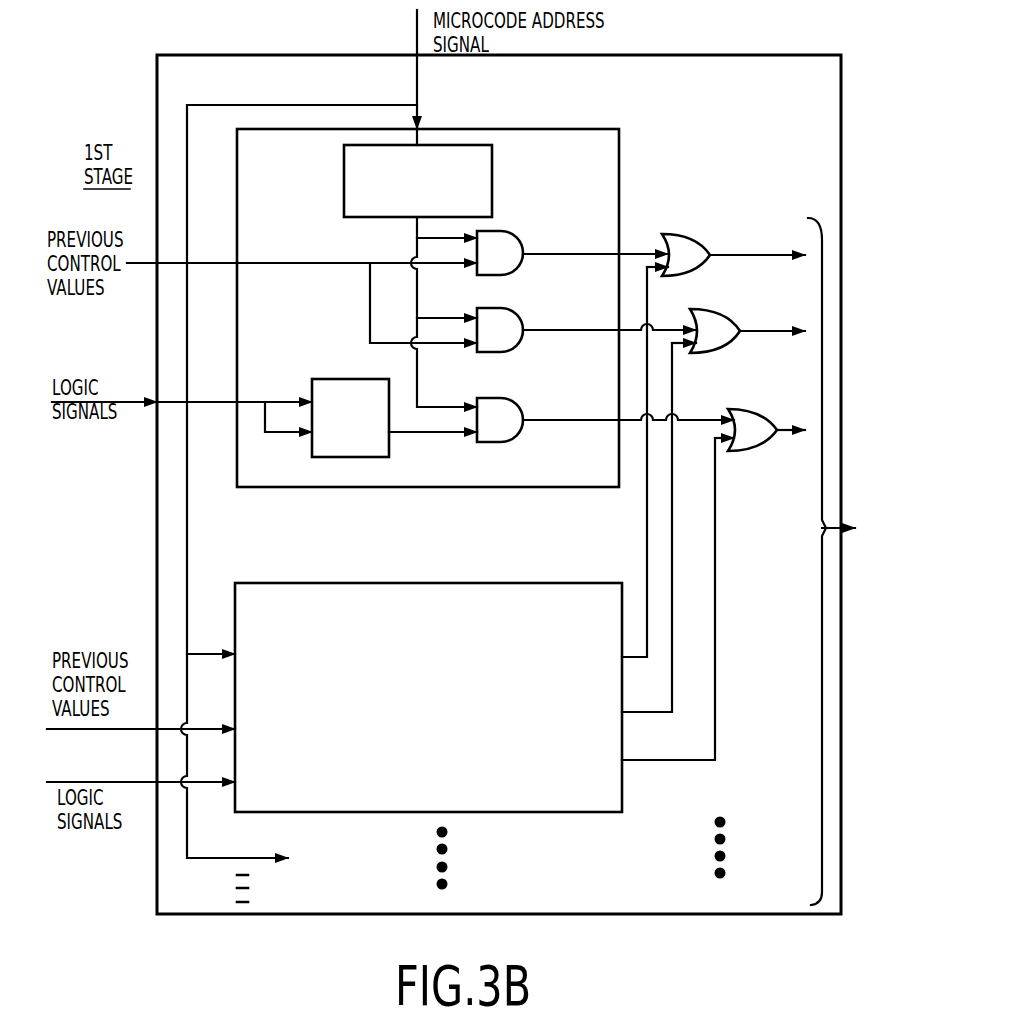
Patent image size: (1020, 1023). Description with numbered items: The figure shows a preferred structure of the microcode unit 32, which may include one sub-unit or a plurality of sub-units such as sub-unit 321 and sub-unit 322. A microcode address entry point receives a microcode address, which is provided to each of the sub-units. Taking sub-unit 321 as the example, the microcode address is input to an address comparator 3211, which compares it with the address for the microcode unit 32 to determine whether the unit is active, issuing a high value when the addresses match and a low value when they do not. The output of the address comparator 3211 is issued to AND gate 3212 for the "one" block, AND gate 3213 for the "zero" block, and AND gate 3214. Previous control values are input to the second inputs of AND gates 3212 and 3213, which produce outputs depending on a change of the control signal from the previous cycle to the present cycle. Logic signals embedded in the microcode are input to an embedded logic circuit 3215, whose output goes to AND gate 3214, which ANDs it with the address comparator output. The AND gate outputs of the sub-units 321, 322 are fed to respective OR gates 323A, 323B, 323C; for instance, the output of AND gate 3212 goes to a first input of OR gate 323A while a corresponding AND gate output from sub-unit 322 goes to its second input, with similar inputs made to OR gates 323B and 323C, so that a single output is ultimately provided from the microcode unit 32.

The microcode unit 32 is at (656, 915).
The sub-unit 321 is at (610, 160).
The address comparator 3211 is at (492, 176).
The AND gate 3212 is at (510, 262).
The AND gate 3213 is at (508, 342).
The AND gate 3214 is at (513, 410).
The embedded logic circuit 3215 is at (352, 378).
The sub-unit 322 is at (507, 585).
The OR gate 323A is at (690, 246).
The OR gate 323B is at (718, 318).
The OR gate 323C is at (756, 416).